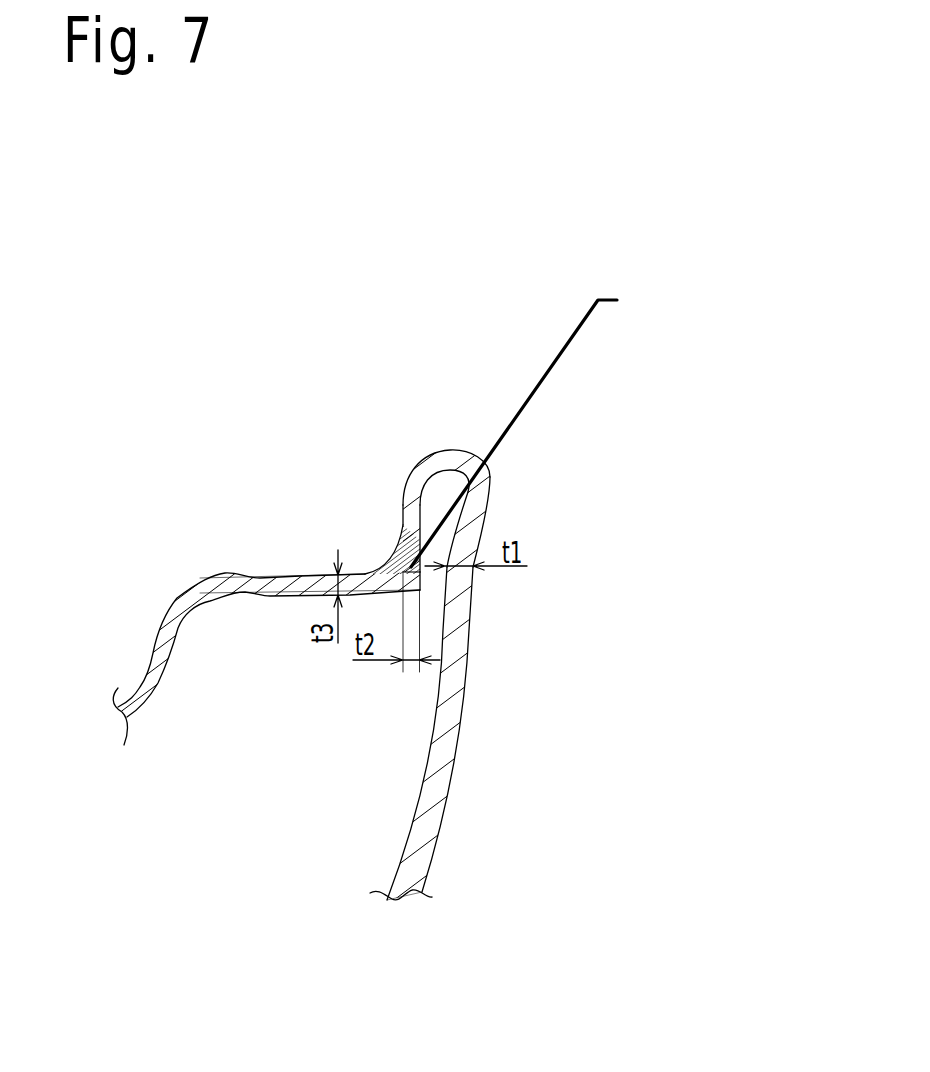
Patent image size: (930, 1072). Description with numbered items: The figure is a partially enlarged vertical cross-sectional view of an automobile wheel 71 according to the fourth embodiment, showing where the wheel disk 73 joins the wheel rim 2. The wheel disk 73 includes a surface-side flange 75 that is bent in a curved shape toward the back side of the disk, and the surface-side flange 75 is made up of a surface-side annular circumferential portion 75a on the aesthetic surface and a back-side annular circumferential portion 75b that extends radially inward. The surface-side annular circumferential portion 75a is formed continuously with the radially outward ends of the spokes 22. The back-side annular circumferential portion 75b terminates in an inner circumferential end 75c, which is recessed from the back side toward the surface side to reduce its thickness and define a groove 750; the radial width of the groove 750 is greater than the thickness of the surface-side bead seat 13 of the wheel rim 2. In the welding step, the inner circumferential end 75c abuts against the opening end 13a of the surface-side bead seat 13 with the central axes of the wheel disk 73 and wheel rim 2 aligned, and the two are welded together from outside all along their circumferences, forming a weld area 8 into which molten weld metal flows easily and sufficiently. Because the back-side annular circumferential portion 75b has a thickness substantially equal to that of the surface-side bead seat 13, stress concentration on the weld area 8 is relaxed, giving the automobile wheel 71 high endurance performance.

The automobile wheel 71 is at (185, 404).
The wheel rim 2 is at (177, 598).
The weld area 8 is at (400, 563).
The surface-side bead seat 13 is at (307, 587).
The opening end 13a is at (397, 582).
The spokes 22 is at (437, 788).
The wheel disk 73 is at (468, 663).
The surface-side flange 75 is at (468, 463).
The surface-side annular circumferential portion 75a is at (465, 538).
The back-side annular circumferential portion 75b is at (412, 525).
The inner circumferential end 75c is at (425, 577).
The groove 750 is at (530, 426).